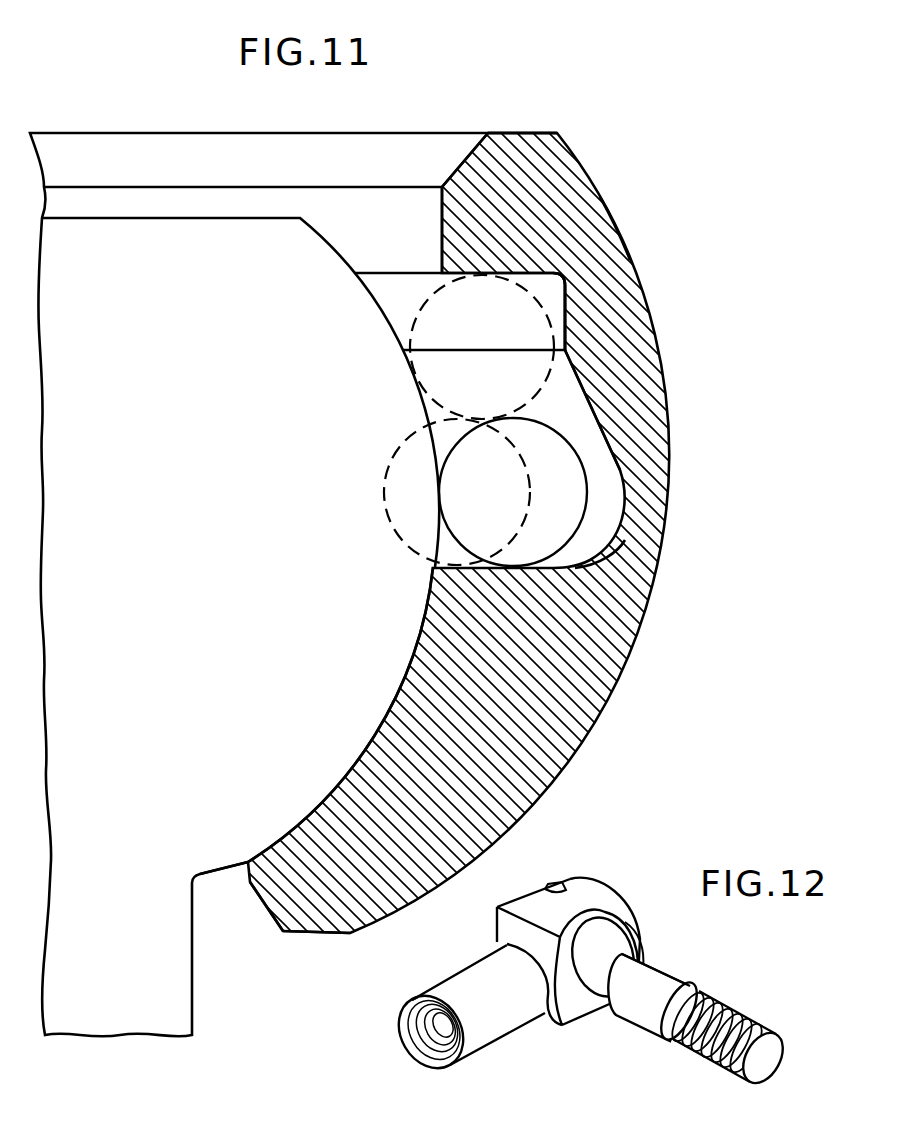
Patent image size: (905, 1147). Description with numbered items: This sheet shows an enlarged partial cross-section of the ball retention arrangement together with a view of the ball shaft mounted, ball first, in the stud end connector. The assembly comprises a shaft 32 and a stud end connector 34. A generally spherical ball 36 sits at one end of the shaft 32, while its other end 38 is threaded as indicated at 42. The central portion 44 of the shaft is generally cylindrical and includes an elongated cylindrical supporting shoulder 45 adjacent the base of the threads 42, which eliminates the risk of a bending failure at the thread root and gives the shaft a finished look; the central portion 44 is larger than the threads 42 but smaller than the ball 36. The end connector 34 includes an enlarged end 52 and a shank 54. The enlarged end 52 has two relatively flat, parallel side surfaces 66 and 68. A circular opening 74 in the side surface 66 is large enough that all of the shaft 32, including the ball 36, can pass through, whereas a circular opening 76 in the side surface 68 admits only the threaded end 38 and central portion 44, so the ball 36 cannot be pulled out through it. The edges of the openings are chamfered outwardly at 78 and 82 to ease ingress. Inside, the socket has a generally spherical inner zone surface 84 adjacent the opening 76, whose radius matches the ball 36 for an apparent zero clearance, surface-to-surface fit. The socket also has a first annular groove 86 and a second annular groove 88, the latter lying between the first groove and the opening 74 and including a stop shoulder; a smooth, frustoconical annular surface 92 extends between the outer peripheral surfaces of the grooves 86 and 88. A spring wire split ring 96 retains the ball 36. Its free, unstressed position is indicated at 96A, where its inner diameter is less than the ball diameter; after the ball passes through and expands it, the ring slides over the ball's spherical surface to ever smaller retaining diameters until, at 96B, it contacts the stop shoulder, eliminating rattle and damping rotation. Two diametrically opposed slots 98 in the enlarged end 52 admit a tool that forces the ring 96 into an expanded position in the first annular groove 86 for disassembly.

In FIG. 12, the shaft 32 is at (676, 961).
In FIG. 11, the stud end connector 34 is at (612, 220).
In FIG. 12, the stud end connector 34 is at (414, 1058).
In FIG. 11, the ball 36 is at (187, 516).
In FIG. 12, the ball 36 is at (613, 940).
In FIG. 12, the other end 38 is at (752, 1080).
In FIG. 12, the threads 42 is at (748, 1026).
In FIG. 12, the central portion 44 is at (608, 993).
In FIG. 12, the supporting shoulder 45 is at (647, 1023).
In FIG. 11, the enlarged end 52 is at (608, 714).
In FIG. 12, the enlarged end 52 is at (618, 905).
In FIG. 12, the shank 54 is at (475, 1050).
In FIG. 11, the side surface 66 is at (537, 133).
In FIG. 11, the side surface 68 is at (312, 934).
In FIG. 11, the circular opening 74 is at (442, 214).
In FIG. 11, the circular opening 76 is at (248, 864).
In FIG. 11, the chamfer 78 is at (468, 158).
In FIG. 11, the chamfer 82 is at (265, 903).
In FIG. 11, the spherical inner zone surface 84 is at (368, 740).
In FIG. 11, the first annular groove 86 is at (607, 535).
In FIG. 11, the second annular groove 88 is at (566, 307).
In FIG. 11, the annular surface 92 is at (600, 437).
In FIG. 11, the spring wire split ring 96 is at (580, 495).
In FIG. 11, the unstressed position of ring 96A is at (412, 498).
In FIG. 11, the ring position at stop shoulder 96B is at (448, 330).
In FIG. 12, the slots 98 is at (548, 886).